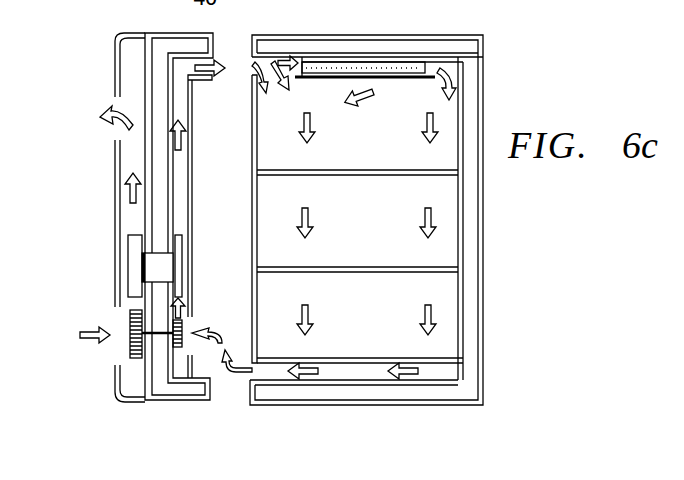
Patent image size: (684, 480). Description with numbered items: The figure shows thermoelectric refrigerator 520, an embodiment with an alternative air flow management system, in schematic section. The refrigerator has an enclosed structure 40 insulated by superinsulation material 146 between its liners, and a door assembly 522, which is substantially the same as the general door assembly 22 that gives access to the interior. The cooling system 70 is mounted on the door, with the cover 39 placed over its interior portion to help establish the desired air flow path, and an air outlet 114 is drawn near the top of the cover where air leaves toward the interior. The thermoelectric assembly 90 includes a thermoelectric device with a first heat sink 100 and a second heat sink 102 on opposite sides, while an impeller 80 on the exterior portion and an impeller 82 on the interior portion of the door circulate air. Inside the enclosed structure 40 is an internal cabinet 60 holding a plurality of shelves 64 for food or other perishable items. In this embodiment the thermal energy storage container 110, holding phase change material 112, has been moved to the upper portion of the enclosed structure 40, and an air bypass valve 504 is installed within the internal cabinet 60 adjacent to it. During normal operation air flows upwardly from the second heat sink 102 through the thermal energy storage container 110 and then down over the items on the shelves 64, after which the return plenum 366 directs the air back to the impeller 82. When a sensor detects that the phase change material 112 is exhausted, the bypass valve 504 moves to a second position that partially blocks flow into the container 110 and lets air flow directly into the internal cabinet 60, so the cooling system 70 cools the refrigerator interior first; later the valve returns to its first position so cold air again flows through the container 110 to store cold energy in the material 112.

The door assembly 22 is at (122, 153).
The cover 39 is at (190, 182).
The enclosed structure 40 is at (495, 215).
The internal cabinet 60 is at (264, 195).
The shelves 64 is at (334, 170).
The cooling system 70 is at (100, 302).
The impeller 80 is at (128, 342).
The impeller 82 is at (185, 326).
The thermoelectric assembly 90 is at (112, 222).
The first heat sink 100 is at (128, 263).
The second heat sink 102 is at (180, 272).
The thermal energy storage container 110 is at (403, 88).
The phase change material 112 is at (418, 62).
The air outlet 114 is at (222, 80).
The superinsulation material 146 is at (472, 302).
The return plenum 366 is at (342, 368).
The air bypass valve 504 is at (281, 90).
The thermoelectric refrigerator 520 is at (510, 48).
The door assembly 522 is at (200, 410).